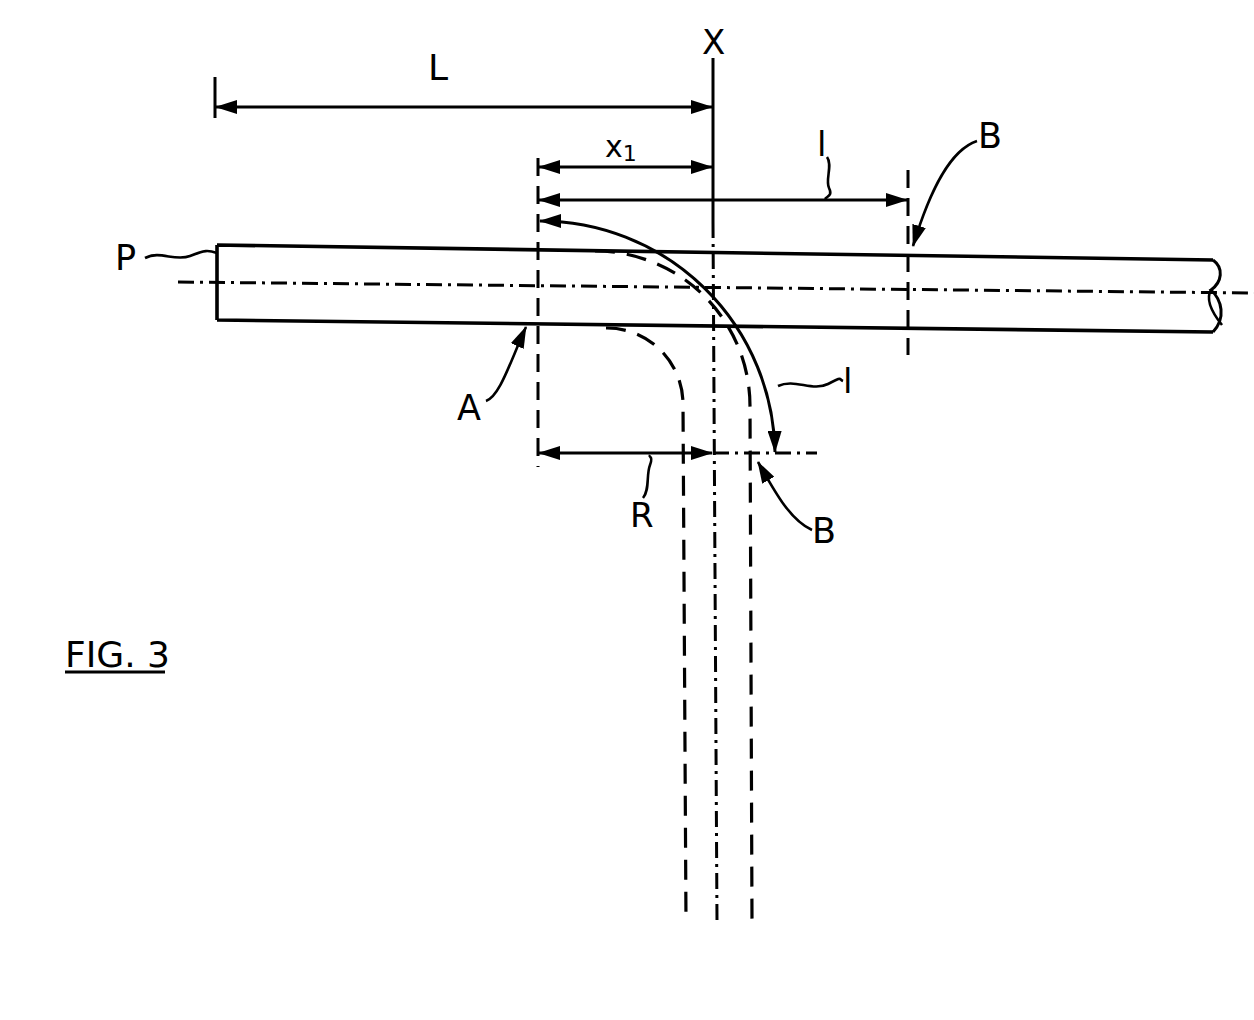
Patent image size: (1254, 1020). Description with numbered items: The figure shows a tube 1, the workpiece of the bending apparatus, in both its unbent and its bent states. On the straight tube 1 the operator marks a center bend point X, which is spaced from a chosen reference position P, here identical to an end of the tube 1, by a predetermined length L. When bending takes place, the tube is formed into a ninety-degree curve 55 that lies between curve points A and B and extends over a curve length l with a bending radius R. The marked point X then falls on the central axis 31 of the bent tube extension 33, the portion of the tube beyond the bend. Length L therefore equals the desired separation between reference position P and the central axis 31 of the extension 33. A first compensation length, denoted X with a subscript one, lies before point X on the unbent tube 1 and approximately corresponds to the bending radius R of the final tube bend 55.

The tube 1 is at (296, 327).
The central axis 31 is at (716, 607).
The bent tube extension 33 is at (752, 772).
The ninety-degree curve 55 is at (660, 358).